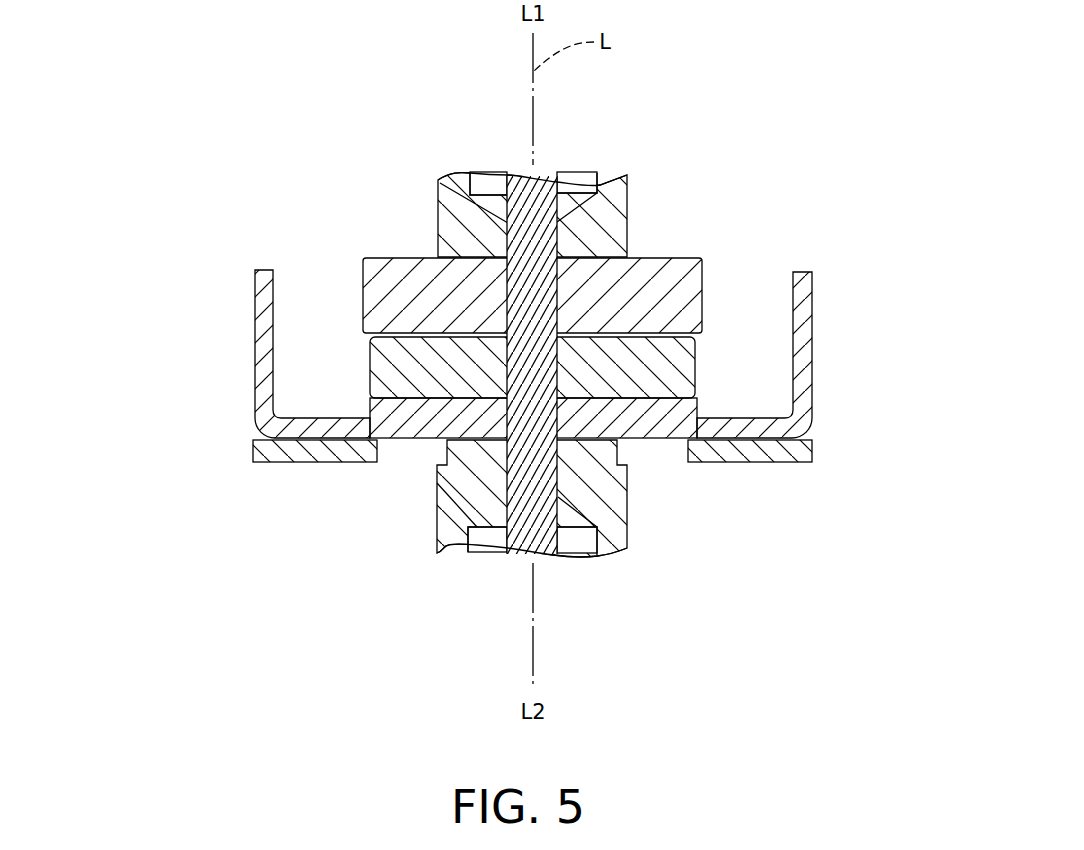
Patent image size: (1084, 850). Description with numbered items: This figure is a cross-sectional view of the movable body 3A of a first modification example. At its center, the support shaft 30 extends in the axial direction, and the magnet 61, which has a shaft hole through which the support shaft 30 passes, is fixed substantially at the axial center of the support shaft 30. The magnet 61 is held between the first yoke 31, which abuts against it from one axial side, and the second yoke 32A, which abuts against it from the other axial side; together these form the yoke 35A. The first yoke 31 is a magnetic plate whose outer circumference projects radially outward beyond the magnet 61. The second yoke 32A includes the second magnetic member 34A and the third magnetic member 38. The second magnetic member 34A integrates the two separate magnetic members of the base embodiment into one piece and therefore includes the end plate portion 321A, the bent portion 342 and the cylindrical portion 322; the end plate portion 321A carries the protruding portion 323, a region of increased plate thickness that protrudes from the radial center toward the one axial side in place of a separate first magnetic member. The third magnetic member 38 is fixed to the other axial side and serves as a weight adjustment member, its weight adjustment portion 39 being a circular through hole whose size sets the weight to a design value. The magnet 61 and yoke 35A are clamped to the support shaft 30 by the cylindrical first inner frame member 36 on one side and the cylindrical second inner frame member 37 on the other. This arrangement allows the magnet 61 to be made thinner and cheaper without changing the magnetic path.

The movable body 3A is at (365, 195).
The support shaft 30 is at (527, 212).
The first yoke 31 is at (380, 312).
The second yoke 32A is at (197, 403).
The second magnetic member 34A is at (256, 343).
The yoke 35A is at (140, 297).
The first inner frame member 36 is at (620, 220).
The second inner frame member 37 is at (617, 533).
The third magnetic member 38 is at (253, 453).
The weight adjustment portion 39 is at (383, 463).
The magnet 61 is at (380, 375).
The end plate portion 321A is at (762, 417).
The cylindrical portion 322 is at (809, 328).
The protruding portion 323 is at (700, 407).
The bent portion 342 is at (812, 424).